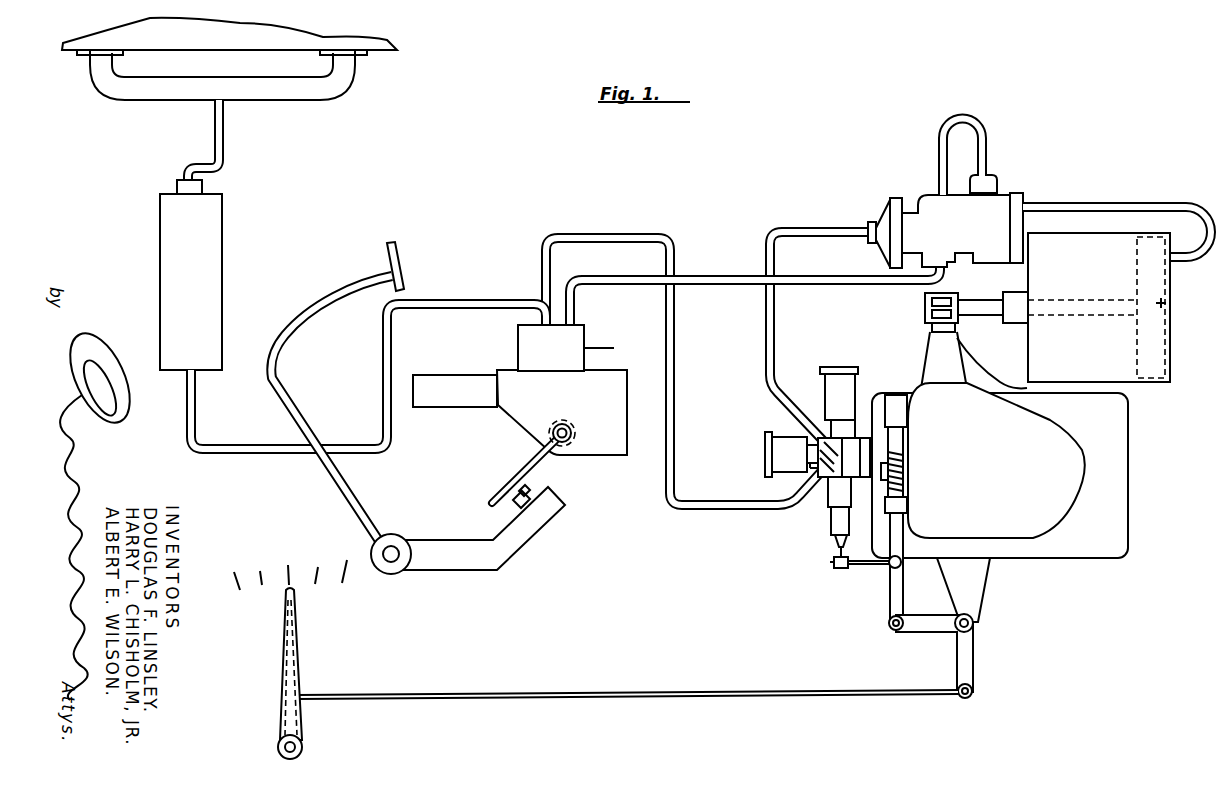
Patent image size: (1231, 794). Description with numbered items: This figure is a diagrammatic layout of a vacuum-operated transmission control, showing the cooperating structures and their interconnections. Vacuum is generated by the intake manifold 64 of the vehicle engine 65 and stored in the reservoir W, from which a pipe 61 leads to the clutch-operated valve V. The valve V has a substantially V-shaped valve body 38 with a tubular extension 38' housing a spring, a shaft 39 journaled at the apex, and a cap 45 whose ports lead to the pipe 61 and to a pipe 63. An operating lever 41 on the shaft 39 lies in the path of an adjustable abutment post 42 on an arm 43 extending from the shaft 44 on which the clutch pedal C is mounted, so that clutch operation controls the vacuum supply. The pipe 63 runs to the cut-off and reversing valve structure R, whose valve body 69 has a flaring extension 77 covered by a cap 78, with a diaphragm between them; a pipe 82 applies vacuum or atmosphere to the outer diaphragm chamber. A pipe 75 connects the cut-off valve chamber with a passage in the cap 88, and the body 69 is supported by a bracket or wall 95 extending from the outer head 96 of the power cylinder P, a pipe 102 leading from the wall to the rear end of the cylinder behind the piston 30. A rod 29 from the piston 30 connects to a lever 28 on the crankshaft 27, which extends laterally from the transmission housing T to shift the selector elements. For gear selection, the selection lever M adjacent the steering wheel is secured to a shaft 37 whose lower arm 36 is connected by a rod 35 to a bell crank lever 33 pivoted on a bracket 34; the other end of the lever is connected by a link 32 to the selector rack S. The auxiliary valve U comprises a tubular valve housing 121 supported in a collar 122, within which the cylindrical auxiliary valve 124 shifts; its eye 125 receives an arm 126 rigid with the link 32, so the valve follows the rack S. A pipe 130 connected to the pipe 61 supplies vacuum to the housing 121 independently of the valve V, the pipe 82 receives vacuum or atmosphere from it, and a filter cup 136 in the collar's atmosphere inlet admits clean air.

The vehicle engine 65 is at (303, 37).
The intake manifold 64 is at (282, 92).
The reservoir W is at (191, 275).
The pipe 61 is at (477, 301).
The pipe 63 is at (634, 285).
The pipe 130 is at (675, 431).
The pipe 82 is at (776, 326).
The clutch pedal C is at (350, 497).
The arm 43 is at (483, 563).
The shaft 44 is at (392, 560).
The adjustable abutment post 42 is at (514, 503).
The operating lever 41 is at (516, 475).
The shaft 39 is at (556, 428).
The valve body 38 is at (578, 412).
The tubular extension 38' is at (455, 407).
The cap 45 is at (598, 358).
The valve structure V is at (562, 394).
The cap 78 is at (888, 204).
The flaring extension 77 is at (897, 198).
The valve body 69 is at (936, 212).
The cut-off and reversing valve structure R is at (966, 230).
The bracket or wall 95 is at (1022, 198).
The cap 88 is at (986, 180).
The pipe 75 is at (985, 138).
The pipe 102 is at (1192, 208).
The power cylinder P is at (1120, 358).
The piston 30 is at (1166, 302).
The outer head 96 is at (1027, 352).
The rod 29 is at (983, 303).
The lever 28 is at (925, 312).
The crankshaft 27 is at (955, 327).
The transmission housing T is at (1084, 550).
The selector rack S is at (905, 530).
The link 32 is at (901, 596).
The bracket 34 is at (972, 591).
The bell crank lever 33 is at (970, 658).
The rod 35 is at (655, 690).
The selection lever M is at (292, 662).
The arm 36 is at (298, 721).
The shaft 37 is at (302, 748).
The valve housing 121 is at (845, 389).
The collar 122 is at (833, 440).
The auxiliary valve U is at (807, 509).
The auxiliary valve 124 is at (832, 520).
The eye 125 is at (836, 563).
The arm 126 is at (870, 566).
The filter cup 136 is at (782, 437).